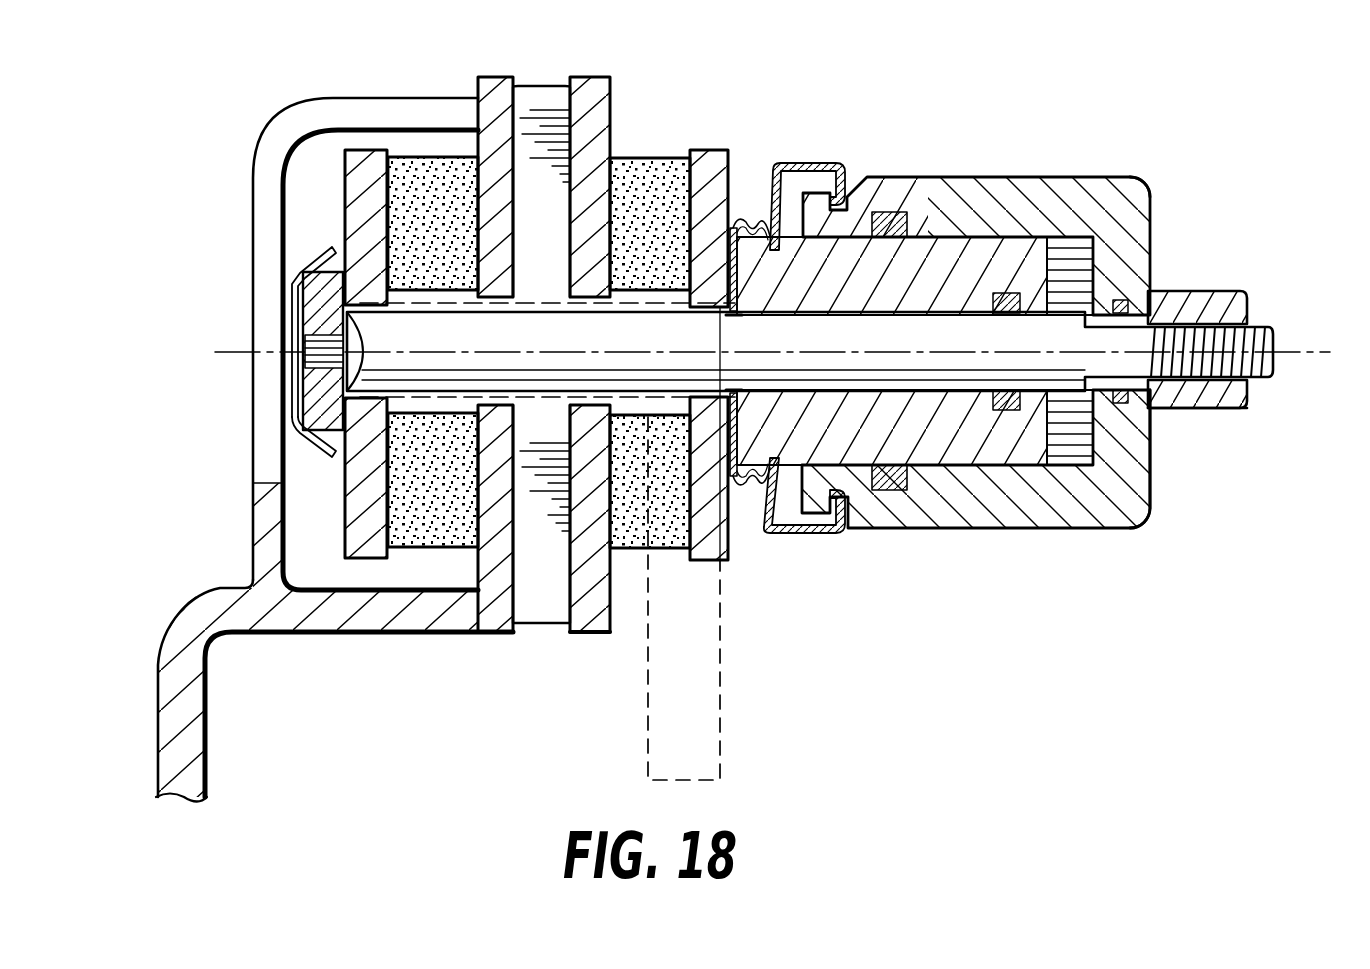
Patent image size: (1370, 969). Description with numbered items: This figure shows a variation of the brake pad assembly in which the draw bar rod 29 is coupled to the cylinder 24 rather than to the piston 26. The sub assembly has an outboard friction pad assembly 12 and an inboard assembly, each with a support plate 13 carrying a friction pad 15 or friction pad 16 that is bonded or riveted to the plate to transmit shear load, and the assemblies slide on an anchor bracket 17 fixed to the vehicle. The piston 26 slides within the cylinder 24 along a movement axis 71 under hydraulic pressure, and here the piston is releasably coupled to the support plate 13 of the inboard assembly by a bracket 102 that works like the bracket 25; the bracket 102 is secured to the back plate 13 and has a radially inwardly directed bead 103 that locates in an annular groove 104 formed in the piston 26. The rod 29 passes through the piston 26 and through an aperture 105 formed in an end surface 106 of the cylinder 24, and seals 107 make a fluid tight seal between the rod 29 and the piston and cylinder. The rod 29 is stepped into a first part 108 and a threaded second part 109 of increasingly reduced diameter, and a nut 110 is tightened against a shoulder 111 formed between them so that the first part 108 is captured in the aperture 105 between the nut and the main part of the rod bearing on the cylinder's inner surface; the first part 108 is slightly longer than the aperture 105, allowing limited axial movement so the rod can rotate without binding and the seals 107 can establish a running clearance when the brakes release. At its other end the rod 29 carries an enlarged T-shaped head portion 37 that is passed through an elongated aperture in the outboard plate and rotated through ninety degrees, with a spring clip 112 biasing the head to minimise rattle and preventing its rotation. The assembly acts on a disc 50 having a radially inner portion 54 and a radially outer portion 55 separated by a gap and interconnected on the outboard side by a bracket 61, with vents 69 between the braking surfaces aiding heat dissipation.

The outboard friction pad assembly 12 is at (326, 152).
The support plate 13 is at (707, 160).
The friction pad 15 is at (640, 175).
The friction pad 16 is at (412, 165).
The anchor bracket 17 is at (712, 706).
The cylinder 24 is at (962, 205).
The bracket 25 is at (735, 255).
The piston 26 is at (922, 250).
The rod 29 is at (496, 346).
The T-shaped head portion 37 is at (303, 408).
The disc 50 is at (557, 73).
The radially inner portion 54 is at (588, 608).
The radially outer portion 55 is at (535, 90).
The bracket 61 is at (272, 145).
The vents 69 is at (541, 226).
The movement axis 71 is at (1314, 350).
The bracket 102 is at (755, 455).
The radially inwardly directed bead 103 is at (757, 232).
The annular groove 104 is at (742, 478).
The aperture 105 is at (1118, 430).
The end surface 106 is at (1122, 213).
The seals 107 is at (1003, 296).
The first part 108 is at (1122, 392).
The second part 109 is at (1213, 408).
The nut 110 is at (1247, 393).
The shoulder 111 is at (1163, 323).
The spring clip 112 is at (283, 291).